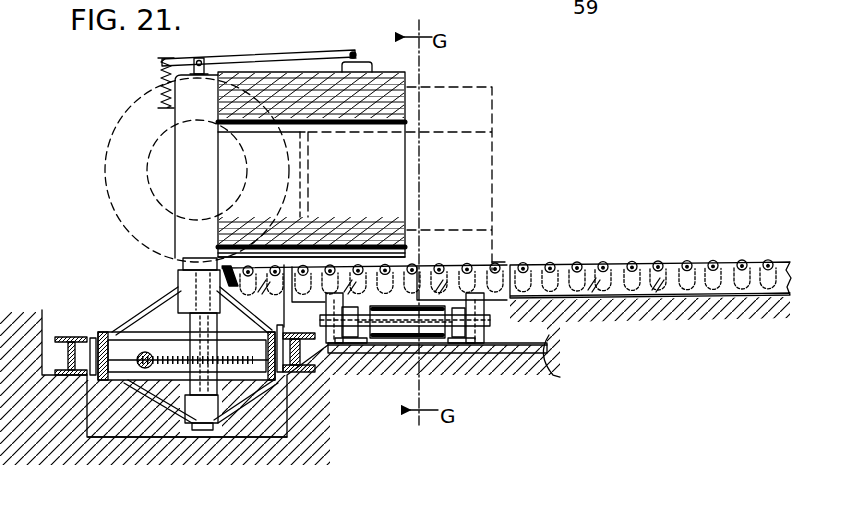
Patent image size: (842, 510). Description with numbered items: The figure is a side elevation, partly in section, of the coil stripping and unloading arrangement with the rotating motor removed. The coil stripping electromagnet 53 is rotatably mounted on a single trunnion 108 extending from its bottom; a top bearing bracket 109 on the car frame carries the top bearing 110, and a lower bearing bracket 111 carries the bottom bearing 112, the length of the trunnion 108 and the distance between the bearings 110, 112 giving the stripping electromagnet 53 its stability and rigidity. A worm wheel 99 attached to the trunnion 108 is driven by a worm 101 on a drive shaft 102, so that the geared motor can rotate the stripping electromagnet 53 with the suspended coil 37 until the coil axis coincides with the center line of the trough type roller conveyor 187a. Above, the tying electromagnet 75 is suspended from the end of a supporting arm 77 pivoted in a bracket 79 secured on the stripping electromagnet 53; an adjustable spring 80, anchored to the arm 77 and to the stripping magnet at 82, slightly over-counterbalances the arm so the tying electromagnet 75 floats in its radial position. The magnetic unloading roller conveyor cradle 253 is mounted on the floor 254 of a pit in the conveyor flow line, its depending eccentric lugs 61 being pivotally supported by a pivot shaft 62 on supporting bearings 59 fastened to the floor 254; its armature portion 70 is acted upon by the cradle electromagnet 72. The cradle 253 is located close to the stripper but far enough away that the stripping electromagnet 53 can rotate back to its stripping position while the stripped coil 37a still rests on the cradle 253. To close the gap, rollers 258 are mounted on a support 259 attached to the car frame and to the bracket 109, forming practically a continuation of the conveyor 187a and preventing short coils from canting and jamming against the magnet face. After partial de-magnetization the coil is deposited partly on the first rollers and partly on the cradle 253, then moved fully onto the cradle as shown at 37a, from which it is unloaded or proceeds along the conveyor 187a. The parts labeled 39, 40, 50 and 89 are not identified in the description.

The coil 37 is at (292, 68).
The stripped coil 37a is at (493, 103).
The mounting plate 39 is at (105, 306).
The bracket 40 is at (86, 337).
The foundation 50 is at (88, 400).
The coil stripping electromagnet 53 is at (165, 61).
The supporting bearings 59 is at (345, 340).
The depending eccentric integral lugs 61 is at (333, 343).
The pivot shaft 62 is at (489, 322).
The magnet armature portion 70 is at (424, 300).
The cradle electromagnet 72 is at (398, 330).
The tying electromagnet 75 is at (366, 62).
The supporting arm 77 is at (233, 59).
The bracket 79 is at (208, 42).
The adjustable spring 80 is at (165, 92).
The spring attachment point on stripping magnet 82 is at (160, 110).
The pit 89 is at (108, 437).
The worm wheel 99 is at (240, 363).
The worm 101 is at (178, 289).
The drive shaft 102 is at (154, 361).
The trunnion 108 is at (203, 430).
The top bearing bracket 109 is at (124, 332).
The top bearing 110 is at (178, 280).
The bearing bracket 111 is at (160, 383).
The bottom bearing 112 is at (186, 421).
The trough type roller conveyor 187a is at (676, 264).
The magnetic unloading roller conveyor cradle 253 is at (485, 264).
The floor of pit 254 is at (555, 372).
The rollers 258 is at (220, 233).
The support 259 is at (302, 228).